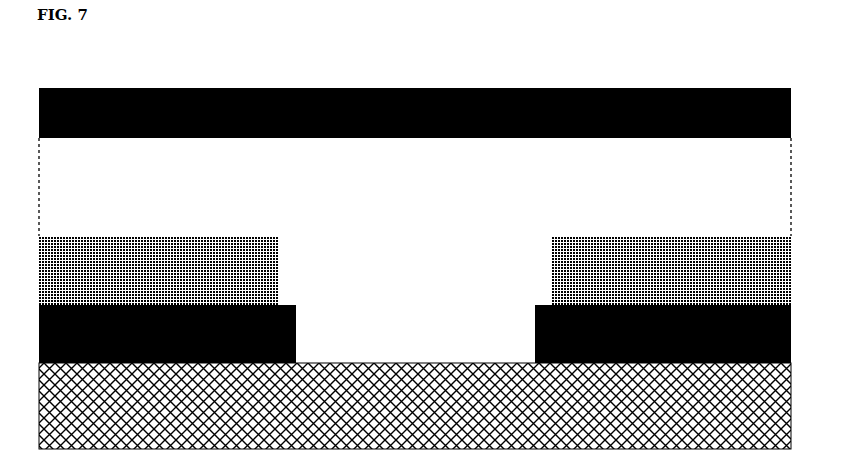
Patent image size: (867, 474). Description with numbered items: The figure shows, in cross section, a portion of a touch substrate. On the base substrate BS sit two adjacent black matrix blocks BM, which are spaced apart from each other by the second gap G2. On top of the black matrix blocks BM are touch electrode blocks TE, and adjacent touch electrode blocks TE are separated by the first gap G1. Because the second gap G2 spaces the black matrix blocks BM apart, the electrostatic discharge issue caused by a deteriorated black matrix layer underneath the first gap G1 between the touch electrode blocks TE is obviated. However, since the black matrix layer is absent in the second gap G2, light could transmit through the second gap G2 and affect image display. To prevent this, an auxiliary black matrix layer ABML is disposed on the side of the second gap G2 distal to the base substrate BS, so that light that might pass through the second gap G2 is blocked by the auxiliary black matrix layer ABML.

The auxiliary black matrix layer ABML is at (415, 113).
The touch electrode block TE is at (415, 271).
The black matrix block BM is at (415, 337).
The base substrate BS is at (415, 406).
The first gap G1 is at (279, 272).
The second gap G2 is at (534, 335).